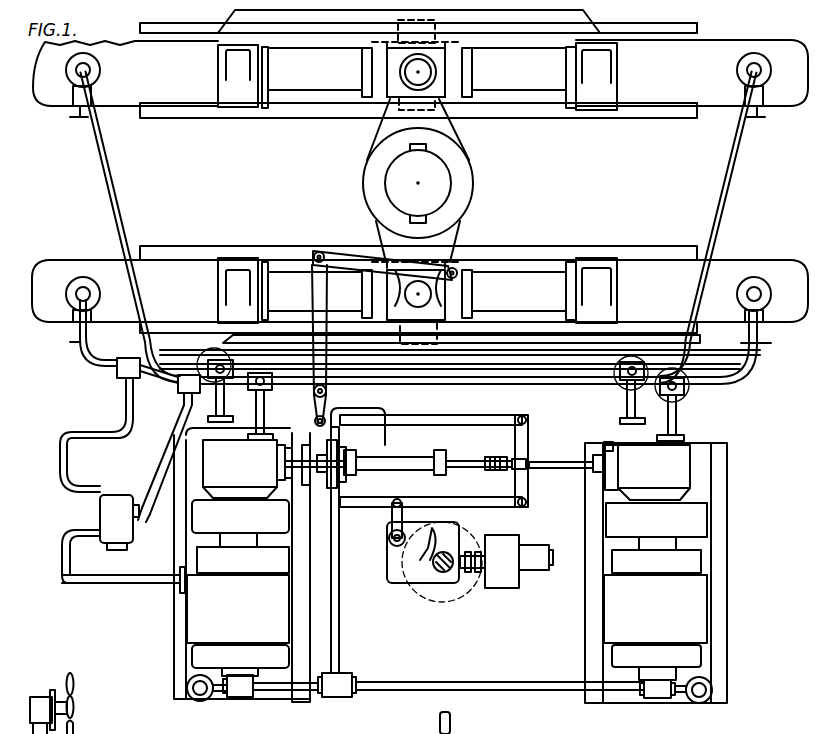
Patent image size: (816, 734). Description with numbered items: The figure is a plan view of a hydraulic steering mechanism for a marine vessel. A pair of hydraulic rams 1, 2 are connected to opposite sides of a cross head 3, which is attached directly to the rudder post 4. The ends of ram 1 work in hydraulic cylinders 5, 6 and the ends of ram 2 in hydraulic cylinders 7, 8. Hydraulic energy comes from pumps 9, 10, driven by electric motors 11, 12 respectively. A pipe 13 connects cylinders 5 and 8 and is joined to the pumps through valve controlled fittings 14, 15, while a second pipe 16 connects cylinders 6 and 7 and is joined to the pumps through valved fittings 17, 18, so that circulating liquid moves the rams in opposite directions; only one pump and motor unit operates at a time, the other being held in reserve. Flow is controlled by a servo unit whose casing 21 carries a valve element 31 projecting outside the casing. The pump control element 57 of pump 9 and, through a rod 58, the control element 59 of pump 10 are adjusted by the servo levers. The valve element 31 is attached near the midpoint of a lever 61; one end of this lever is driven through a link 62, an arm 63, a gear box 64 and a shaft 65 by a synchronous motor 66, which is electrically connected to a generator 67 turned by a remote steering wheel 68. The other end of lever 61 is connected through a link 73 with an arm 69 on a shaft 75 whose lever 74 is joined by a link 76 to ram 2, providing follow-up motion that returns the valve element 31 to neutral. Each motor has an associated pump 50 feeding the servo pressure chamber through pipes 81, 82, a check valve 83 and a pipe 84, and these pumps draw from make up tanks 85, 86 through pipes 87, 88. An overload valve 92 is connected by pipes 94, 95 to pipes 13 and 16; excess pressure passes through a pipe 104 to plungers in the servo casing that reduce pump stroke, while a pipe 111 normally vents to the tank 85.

The hydraulic ram 1 is at (517, 85).
The hydraulic ram 2 is at (502, 288).
The cross head 3 is at (463, 162).
The rudder post 4 is at (404, 173).
The hydraulic cylinder 5 is at (137, 79).
The hydraulic cylinder 6 is at (654, 79).
The hydraulic cylinder 7 is at (154, 302).
The hydraulic cylinder 8 is at (654, 302).
The pump 9 is at (231, 473).
The pump 10 is at (641, 473).
The electric motor 11 is at (227, 616).
The electric motor 12 is at (646, 616).
The pipe 13 is at (110, 167).
The valve controlled fitting 14 is at (267, 391).
The valve controlled fitting 15 is at (683, 398).
The pipe 16 is at (726, 181).
The valved fitting 17 is at (213, 354).
The valved fitting 18 is at (626, 393).
The casing 21 is at (442, 490).
The valve element 31 is at (493, 459).
The pump 50 is at (246, 699).
The control element 57 is at (292, 478).
The rod 58 is at (549, 463).
The control element 59 is at (605, 443).
The lever 61 is at (530, 482).
The link 62 is at (482, 503).
The arm 63 is at (390, 513).
The gear box 64 is at (390, 553).
The shaft 65 is at (444, 570).
The synchronous motor 66 is at (527, 573).
The generator 67 is at (38, 698).
The steering wheel 68 is at (74, 688).
The arm 69 is at (316, 407).
The link 73 is at (472, 422).
The lever 74 is at (322, 344).
The shaft 75 is at (327, 392).
The link 76 is at (337, 255).
The pipe 81 is at (302, 692).
The pipe 82 is at (482, 690).
The check valve 83 is at (344, 697).
The pipe 84 is at (340, 612).
The make up tank 85 is at (192, 663).
The make up tank 86 is at (706, 660).
The pipe 87 is at (216, 691).
The pipe 88 is at (684, 698).
The valve 92 is at (107, 510).
The pipe 94 is at (190, 408).
The pipe 95 is at (78, 437).
The pipe 104 is at (157, 513).
The pipe 111 is at (66, 536).